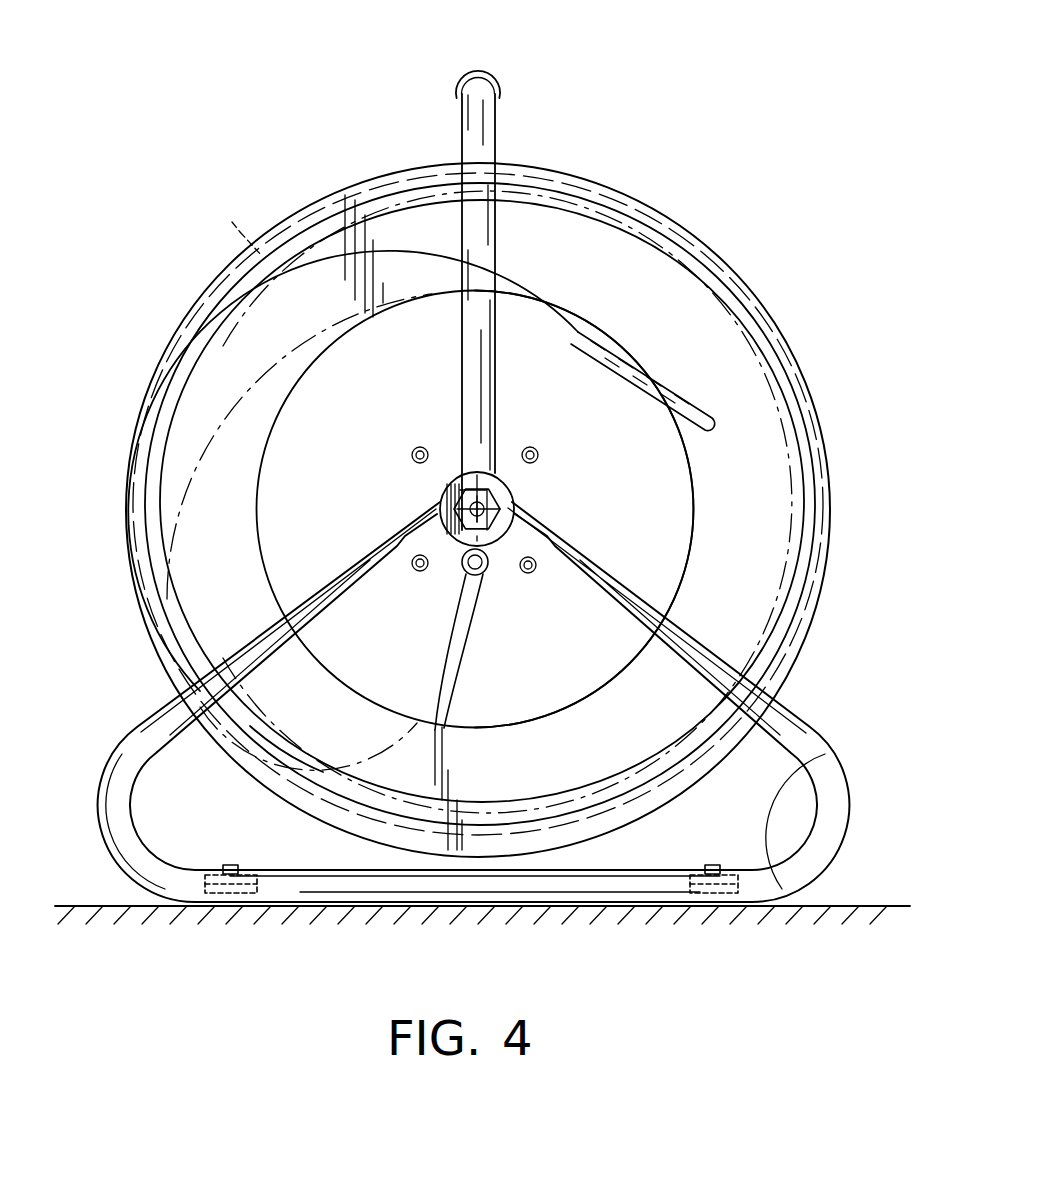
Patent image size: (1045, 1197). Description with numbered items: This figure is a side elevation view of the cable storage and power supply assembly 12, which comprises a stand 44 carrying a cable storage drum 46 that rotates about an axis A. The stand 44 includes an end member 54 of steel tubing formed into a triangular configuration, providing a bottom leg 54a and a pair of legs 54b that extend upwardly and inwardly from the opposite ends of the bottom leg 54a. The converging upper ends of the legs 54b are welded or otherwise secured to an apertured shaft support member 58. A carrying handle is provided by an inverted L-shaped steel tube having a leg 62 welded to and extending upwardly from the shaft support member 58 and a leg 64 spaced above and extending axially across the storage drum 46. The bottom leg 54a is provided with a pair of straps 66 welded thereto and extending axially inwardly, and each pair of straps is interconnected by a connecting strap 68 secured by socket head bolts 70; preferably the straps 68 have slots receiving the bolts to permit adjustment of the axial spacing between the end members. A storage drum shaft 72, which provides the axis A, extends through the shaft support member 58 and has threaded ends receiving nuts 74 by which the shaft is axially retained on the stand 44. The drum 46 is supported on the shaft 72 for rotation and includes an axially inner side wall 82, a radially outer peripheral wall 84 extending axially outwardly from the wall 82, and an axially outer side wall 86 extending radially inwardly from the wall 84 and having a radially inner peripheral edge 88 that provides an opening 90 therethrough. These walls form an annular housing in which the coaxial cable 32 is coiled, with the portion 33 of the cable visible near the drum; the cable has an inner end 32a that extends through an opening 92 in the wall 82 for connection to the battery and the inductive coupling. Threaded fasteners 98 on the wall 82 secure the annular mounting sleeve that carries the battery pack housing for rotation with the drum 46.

The cable storage and power supply assembly 12 is at (592, 140).
The coaxial cable 32 is at (656, 378).
The inner end of coaxial cable 32a is at (466, 572).
The hose end 33 is at (262, 256).
The stand 44 is at (820, 720).
The cable storage drum 46 is at (626, 192).
The end member 54 is at (128, 732).
The bottom leg 54a is at (505, 892).
The legs 54b is at (262, 632).
The shaft support member 58 is at (450, 548).
The leg of carrying handle 62 is at (486, 253).
The leg of carrying handle 64 is at (486, 72).
The straps 66 is at (230, 912).
The connecting strap 68 is at (248, 876).
The socket head bolts 70 is at (232, 864).
The storage drum shaft 72 is at (494, 535).
The nuts 74 is at (453, 497).
The axially inner side wall 82 is at (631, 510).
The radially outer peripheral wall 84 is at (718, 250).
The axially outer side wall 86 is at (190, 392).
The radially inner peripheral edge 88 is at (292, 393).
The opening 90 is at (680, 487).
The opening 92 is at (481, 573).
The threaded fasteners 98 is at (537, 452).
The axis A is at (485, 505).